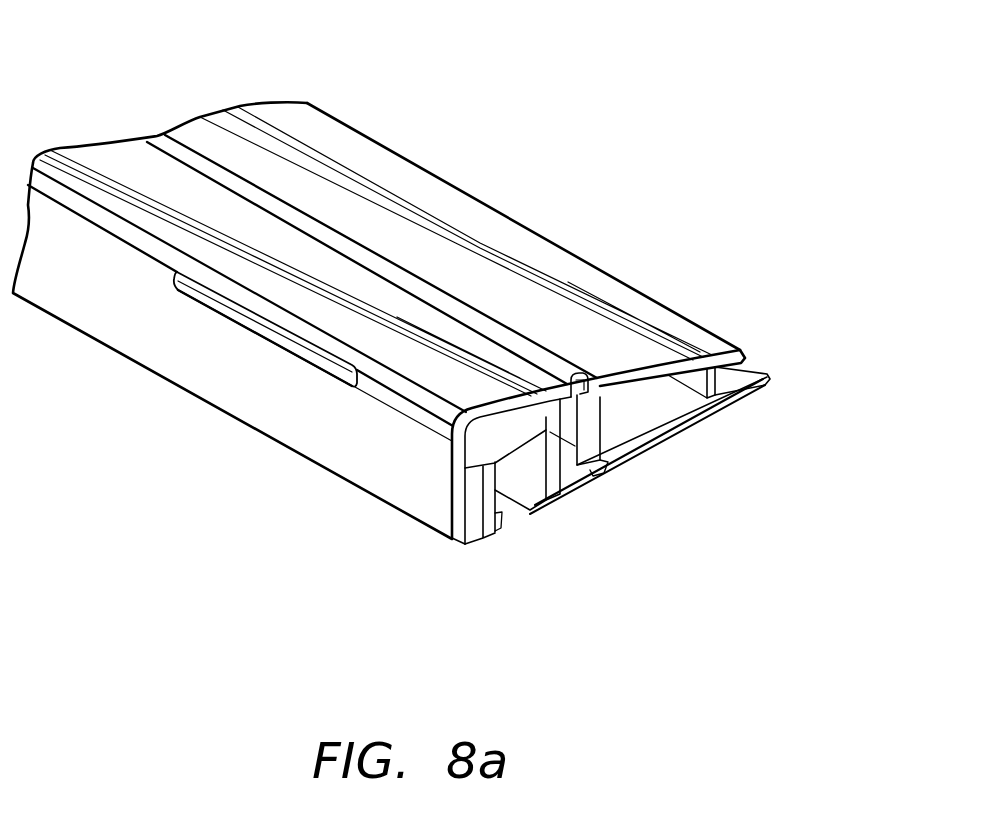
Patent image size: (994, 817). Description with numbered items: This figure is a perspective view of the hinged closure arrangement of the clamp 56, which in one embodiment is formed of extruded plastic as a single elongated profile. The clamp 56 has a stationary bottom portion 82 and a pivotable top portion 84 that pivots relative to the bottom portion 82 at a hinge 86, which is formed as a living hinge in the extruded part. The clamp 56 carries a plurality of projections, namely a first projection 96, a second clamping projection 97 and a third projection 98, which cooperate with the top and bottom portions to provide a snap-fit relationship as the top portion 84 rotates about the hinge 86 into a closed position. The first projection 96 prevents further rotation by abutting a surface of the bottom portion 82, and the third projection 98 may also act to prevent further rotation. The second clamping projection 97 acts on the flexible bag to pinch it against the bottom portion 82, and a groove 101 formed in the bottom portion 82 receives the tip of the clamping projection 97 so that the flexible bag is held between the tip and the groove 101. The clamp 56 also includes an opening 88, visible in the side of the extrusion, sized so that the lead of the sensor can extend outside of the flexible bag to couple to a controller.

The clamp 56 is at (553, 100).
The bottom portion 82 is at (170, 166).
The top portion 84 is at (631, 285).
The hinge 86 is at (432, 283).
The opening 88 is at (228, 325).
The first projection 96 is at (584, 468).
The second clamping projection 97 is at (602, 408).
The third projection 98 is at (768, 374).
The groove 101 is at (615, 465).